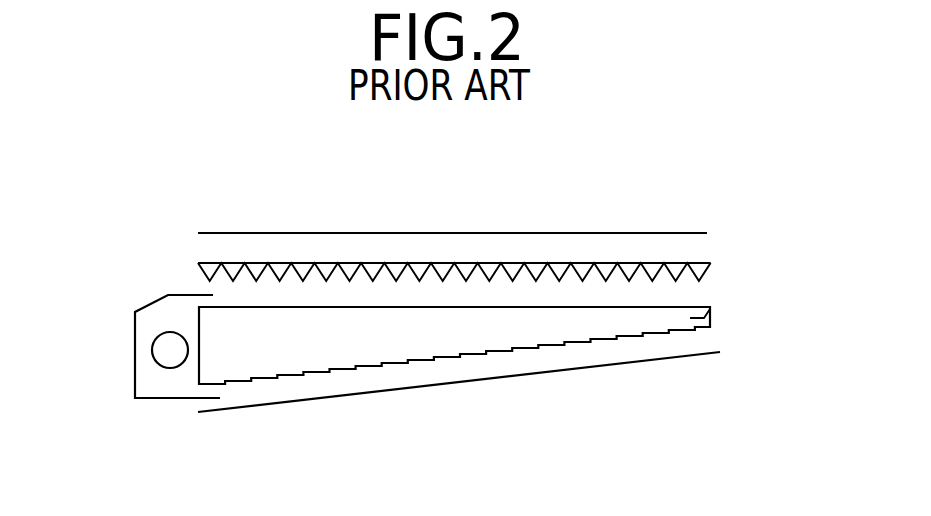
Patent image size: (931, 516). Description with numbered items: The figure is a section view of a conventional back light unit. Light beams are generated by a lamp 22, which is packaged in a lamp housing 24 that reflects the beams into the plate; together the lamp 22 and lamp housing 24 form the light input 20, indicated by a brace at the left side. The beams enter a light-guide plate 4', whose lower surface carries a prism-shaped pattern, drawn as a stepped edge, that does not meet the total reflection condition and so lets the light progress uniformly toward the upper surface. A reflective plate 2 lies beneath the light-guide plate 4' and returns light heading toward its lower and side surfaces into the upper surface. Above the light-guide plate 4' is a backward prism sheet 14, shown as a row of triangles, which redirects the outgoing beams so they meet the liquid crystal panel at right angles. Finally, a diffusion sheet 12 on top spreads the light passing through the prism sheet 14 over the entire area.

The reflective plate 2 is at (690, 358).
The light-guide plate 4' is at (490, 327).
The diffusion sheet 12 is at (707, 233).
The prism sheet 14 is at (710, 263).
The light input 20 is at (131, 370).
The lamp 22 is at (166, 350).
The lamp housing 24 is at (150, 304).